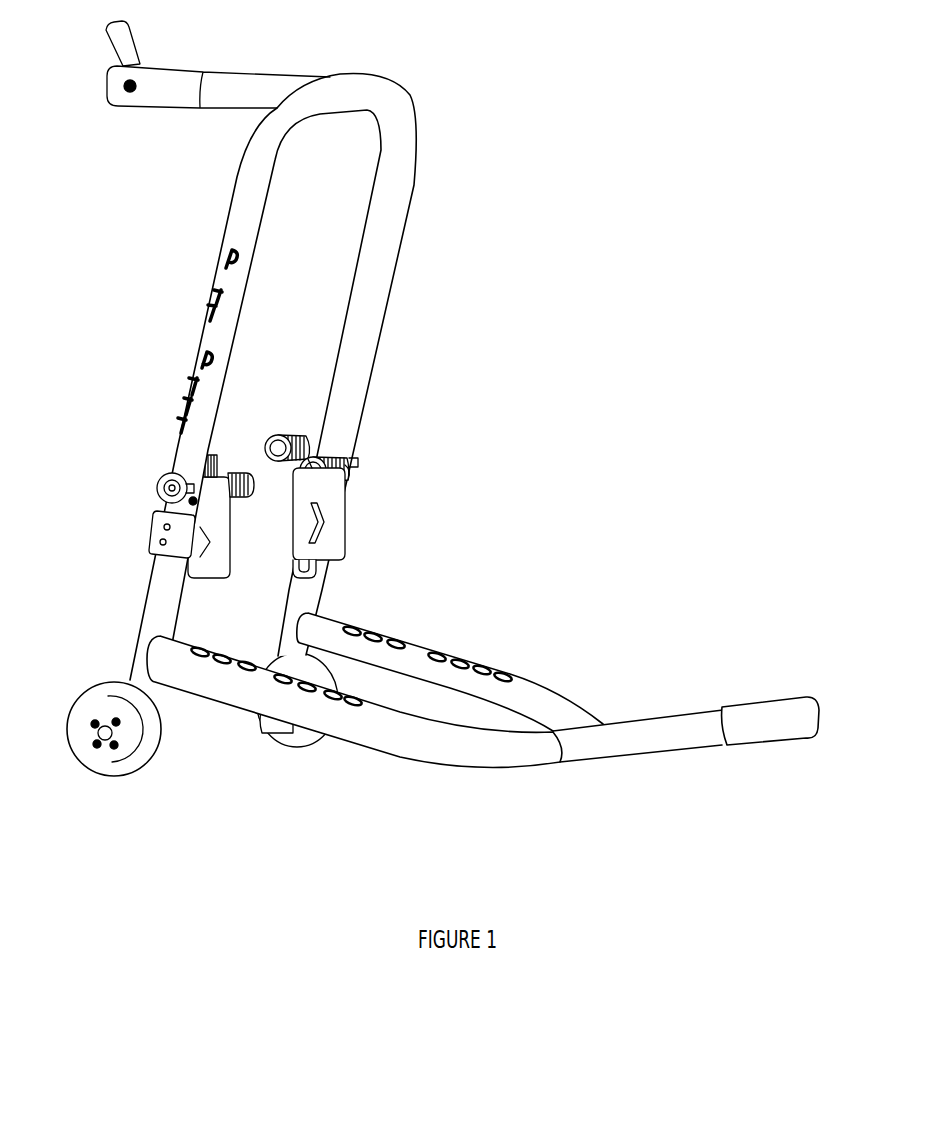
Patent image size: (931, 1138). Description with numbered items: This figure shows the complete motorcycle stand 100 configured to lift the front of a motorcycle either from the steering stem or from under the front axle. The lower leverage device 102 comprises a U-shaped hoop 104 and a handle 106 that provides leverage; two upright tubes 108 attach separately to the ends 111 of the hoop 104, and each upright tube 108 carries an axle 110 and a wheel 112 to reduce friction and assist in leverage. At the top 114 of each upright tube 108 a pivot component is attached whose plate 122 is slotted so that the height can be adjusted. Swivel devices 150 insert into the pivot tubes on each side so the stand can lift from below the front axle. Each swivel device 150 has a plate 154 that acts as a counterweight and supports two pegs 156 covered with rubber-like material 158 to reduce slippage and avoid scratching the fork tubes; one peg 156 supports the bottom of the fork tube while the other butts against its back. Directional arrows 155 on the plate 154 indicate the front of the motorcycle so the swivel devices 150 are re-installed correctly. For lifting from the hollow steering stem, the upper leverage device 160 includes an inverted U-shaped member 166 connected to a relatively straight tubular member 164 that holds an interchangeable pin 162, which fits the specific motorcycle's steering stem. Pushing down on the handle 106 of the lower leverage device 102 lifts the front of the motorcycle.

The motorcycle stand 100 is at (515, 331).
The lower leverage device 102 is at (542, 681).
The U-shaped hoop 104 is at (433, 685).
The handle 106 is at (770, 702).
The upright tubes 108 is at (155, 610).
The axle 110 is at (100, 742).
The ends 111 is at (145, 650).
The wheel 112 is at (140, 757).
The top 114 is at (157, 535).
The plate 122 is at (290, 568).
The swivel devices 150 is at (359, 533).
The plate 154 is at (348, 496).
The directional arrows 155 is at (337, 550).
The pegs 156 is at (300, 466).
The rubber-like material 158 is at (290, 438).
The upper leverage device 160 is at (441, 201).
The pins 162 is at (123, 43).
The tubular member 164 is at (233, 75).
The inverted U-shaped member 166 is at (234, 215).